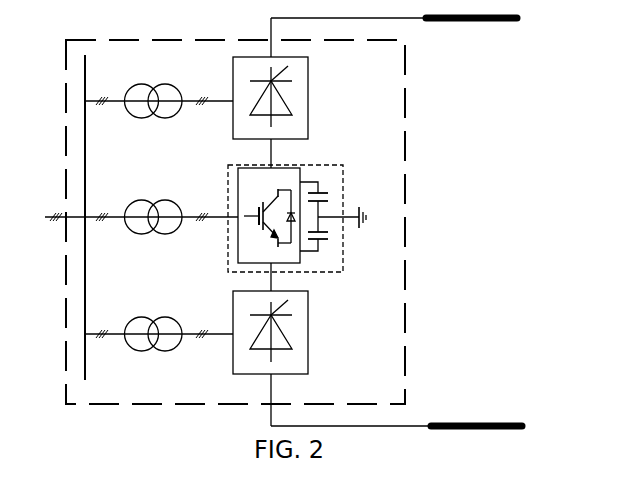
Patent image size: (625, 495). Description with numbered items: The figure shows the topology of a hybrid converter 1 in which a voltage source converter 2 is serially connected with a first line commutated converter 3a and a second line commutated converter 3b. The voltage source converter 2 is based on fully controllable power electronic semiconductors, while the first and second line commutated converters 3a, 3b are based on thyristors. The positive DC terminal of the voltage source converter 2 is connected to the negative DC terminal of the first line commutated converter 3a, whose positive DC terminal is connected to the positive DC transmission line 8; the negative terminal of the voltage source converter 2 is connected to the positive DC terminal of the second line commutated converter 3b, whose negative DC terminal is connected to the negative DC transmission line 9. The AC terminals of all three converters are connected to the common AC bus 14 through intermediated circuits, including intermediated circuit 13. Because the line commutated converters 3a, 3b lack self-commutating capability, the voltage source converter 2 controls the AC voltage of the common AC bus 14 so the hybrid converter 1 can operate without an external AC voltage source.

The hybrid converter 1 is at (406, 204).
The voltage source converter 2 is at (343, 172).
The first line commutated converter 3a is at (310, 85).
The second line commutated converter 3b is at (310, 333).
The positive DC transmission line 8 is at (484, 22).
The negative DC transmission line 9 is at (483, 422).
The intermediated circuit 13 is at (150, 200).
The common AC bus 14 is at (86, 73).